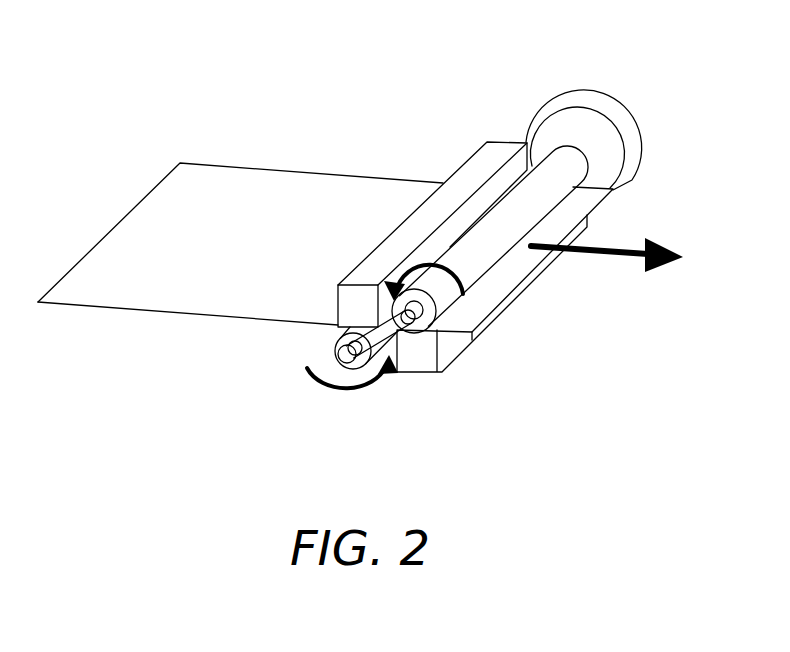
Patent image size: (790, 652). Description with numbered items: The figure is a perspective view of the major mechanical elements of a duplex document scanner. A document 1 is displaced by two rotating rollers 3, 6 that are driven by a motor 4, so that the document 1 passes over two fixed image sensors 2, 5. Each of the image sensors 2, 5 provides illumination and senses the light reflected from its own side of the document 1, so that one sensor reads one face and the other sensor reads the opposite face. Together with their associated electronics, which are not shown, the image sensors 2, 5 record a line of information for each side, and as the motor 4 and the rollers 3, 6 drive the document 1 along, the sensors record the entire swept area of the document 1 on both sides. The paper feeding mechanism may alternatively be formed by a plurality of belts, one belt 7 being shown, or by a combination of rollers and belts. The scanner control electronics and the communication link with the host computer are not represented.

The document 1 is at (333, 193).
The image sensor 2 is at (423, 362).
The rotating roller 3 is at (468, 267).
The motor 4 is at (580, 100).
The image sensor 5 is at (490, 160).
The rotating roller 6 is at (335, 333).
The belt 7 is at (372, 285).